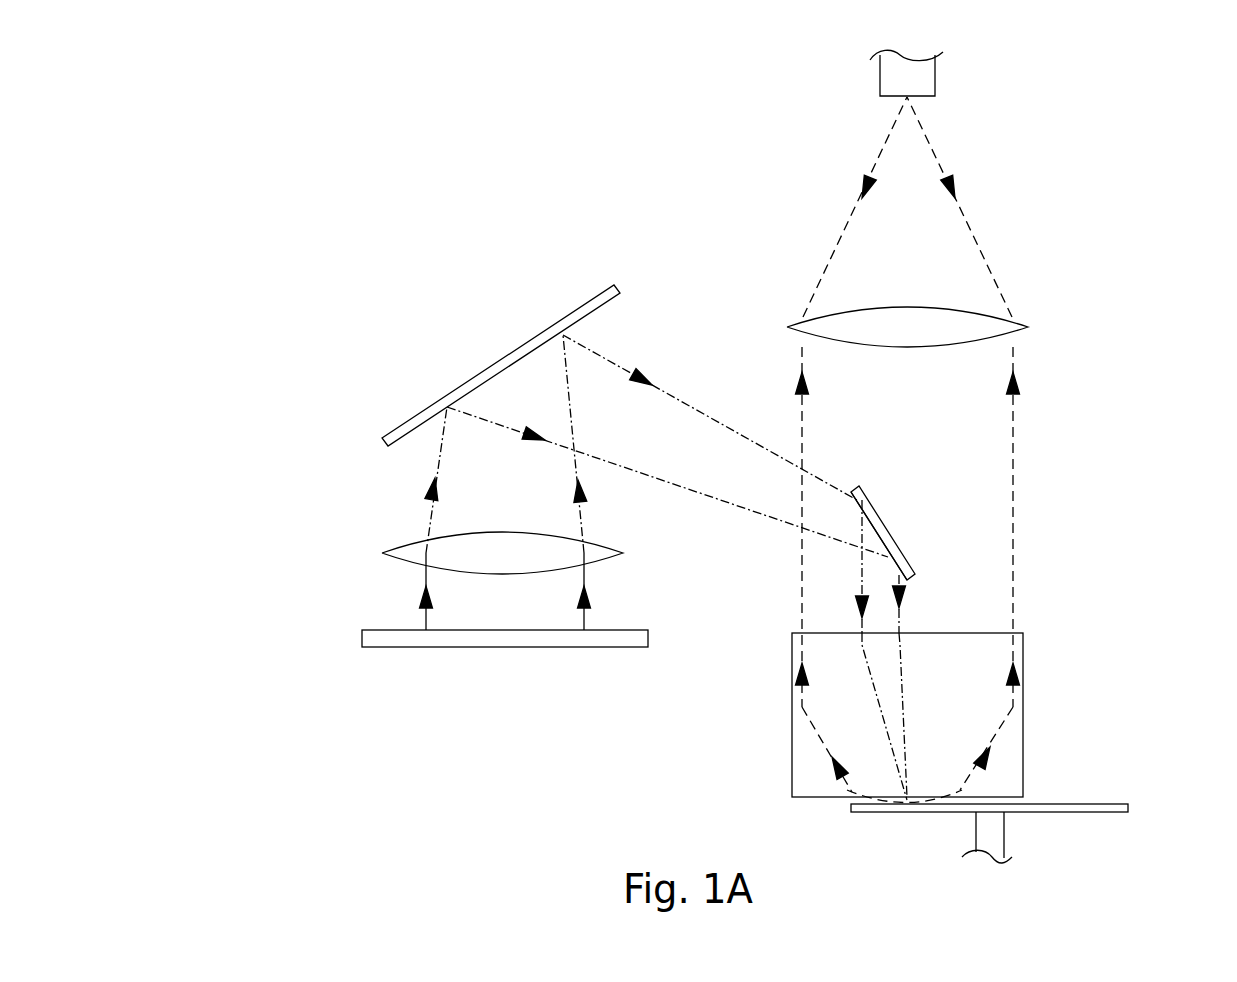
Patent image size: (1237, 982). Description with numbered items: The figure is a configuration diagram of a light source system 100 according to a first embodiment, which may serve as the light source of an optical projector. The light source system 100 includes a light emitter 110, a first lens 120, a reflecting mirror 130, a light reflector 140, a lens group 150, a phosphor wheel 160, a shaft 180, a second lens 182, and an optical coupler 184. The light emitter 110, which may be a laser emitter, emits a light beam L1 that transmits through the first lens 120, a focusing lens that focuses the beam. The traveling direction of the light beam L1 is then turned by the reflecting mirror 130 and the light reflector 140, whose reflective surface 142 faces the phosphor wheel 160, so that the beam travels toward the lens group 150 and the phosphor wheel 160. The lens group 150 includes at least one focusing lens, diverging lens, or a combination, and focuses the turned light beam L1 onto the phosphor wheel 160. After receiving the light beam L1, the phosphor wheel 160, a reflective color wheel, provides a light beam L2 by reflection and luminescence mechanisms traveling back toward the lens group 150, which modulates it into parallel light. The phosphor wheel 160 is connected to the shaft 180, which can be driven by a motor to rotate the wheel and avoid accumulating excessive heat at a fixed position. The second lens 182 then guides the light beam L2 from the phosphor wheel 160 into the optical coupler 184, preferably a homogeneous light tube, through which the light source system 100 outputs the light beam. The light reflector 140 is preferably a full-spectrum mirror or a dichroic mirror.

The light source system 100 is at (383, 35).
The light emitter 110 is at (368, 638).
The first lens 120 is at (403, 543).
The reflecting mirror 130 is at (407, 425).
The light reflector 140 is at (880, 533).
The reflective surface 142 is at (859, 488).
The lens group 150 is at (1023, 728).
The phosphor wheel 160 is at (1130, 805).
The shaft 180 is at (993, 832).
The second lens 182 is at (905, 313).
The optical coupler 184 is at (923, 77).
The light beam L1 is at (422, 618).
The light beam L2 is at (810, 728).